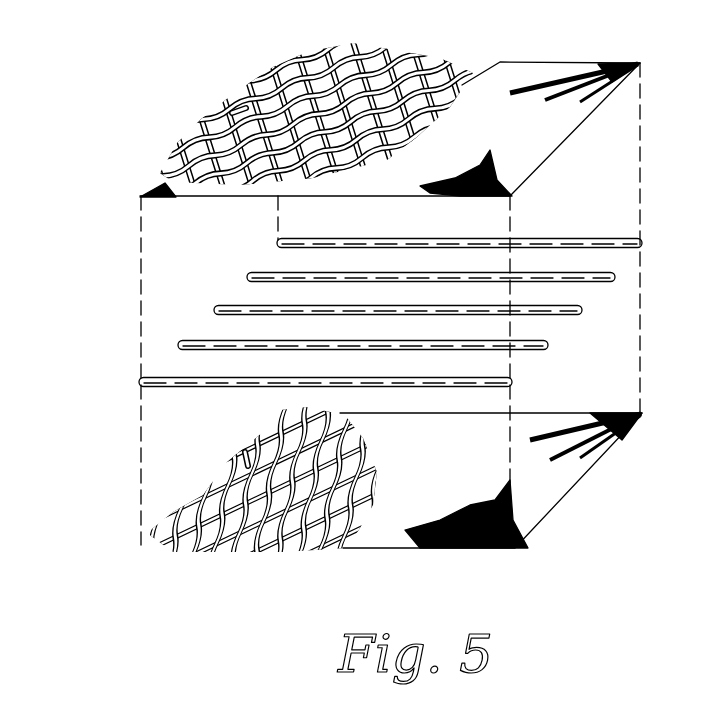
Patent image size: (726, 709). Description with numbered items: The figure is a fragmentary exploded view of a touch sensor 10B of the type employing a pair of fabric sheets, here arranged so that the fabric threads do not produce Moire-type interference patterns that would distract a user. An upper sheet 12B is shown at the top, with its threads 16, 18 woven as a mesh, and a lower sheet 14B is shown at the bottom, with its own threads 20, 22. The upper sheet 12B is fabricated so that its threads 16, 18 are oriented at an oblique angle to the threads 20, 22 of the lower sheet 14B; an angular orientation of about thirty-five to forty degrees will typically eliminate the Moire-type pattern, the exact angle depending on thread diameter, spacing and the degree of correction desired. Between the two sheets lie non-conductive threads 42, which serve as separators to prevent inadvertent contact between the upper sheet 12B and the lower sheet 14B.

The touch sensor 10B is at (126, 210).
The upper sheet 12B is at (559, 56).
The lower sheet 14B is at (598, 475).
The thread 16 is at (258, 78).
The thread 18 is at (232, 113).
The thread 20 is at (196, 508).
The thread 22 is at (245, 452).
The non-conductive threads 42 is at (231, 387).